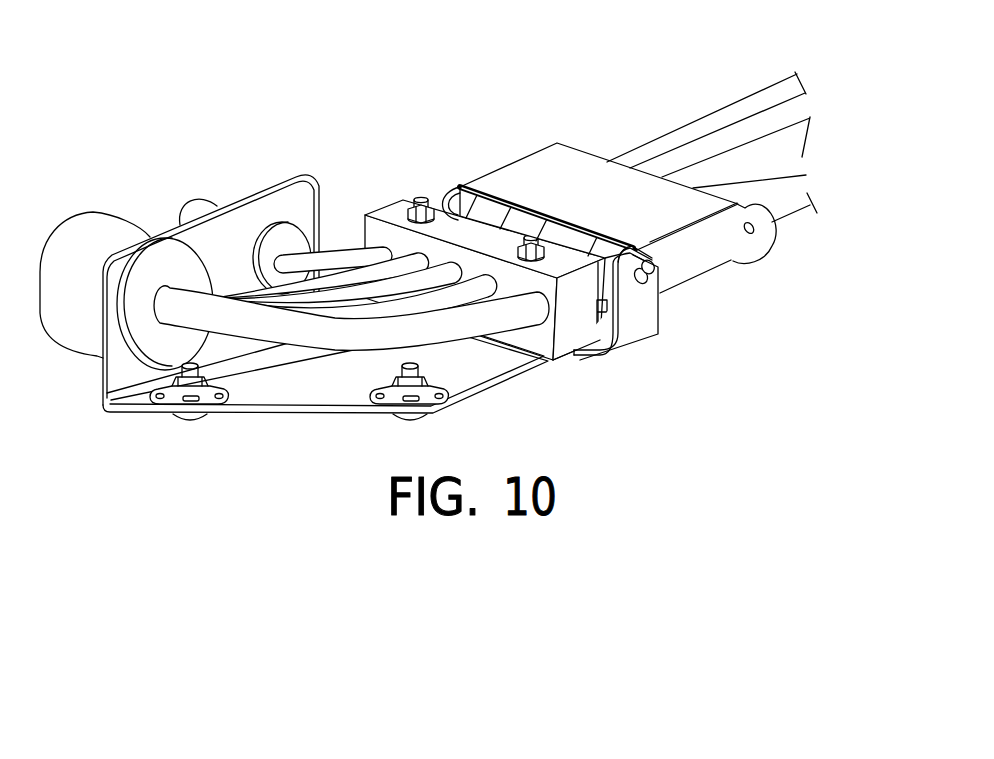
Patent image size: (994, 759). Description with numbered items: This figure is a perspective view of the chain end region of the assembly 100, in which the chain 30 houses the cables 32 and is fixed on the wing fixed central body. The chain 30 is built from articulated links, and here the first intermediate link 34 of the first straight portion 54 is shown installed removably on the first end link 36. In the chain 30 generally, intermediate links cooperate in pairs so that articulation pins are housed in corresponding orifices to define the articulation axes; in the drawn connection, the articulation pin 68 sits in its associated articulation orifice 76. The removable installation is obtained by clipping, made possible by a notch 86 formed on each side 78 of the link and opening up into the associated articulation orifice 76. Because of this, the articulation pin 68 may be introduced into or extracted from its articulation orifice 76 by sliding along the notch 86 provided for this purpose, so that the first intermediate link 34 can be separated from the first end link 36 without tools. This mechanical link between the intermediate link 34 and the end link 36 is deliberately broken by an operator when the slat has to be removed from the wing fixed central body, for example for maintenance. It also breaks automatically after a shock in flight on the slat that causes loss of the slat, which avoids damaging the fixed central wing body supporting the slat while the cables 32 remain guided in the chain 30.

The assembly 100 is at (588, 47).
The chain 30 is at (608, 141).
The cables 32 is at (770, 180).
The intermediate link 34 is at (733, 259).
The first end link 36 is at (650, 315).
The first straight portion 54 is at (488, 155).
The articulation pin 68 is at (635, 289).
The articulation orifice 76 is at (648, 282).
The side 78 is at (606, 240).
The notch 86 is at (643, 252).